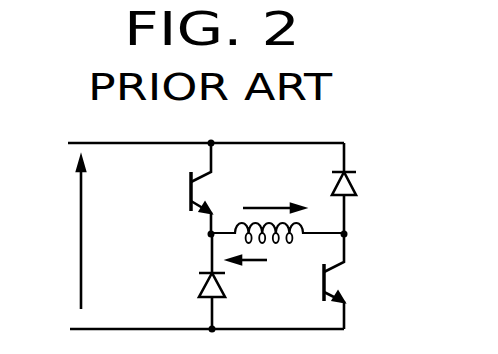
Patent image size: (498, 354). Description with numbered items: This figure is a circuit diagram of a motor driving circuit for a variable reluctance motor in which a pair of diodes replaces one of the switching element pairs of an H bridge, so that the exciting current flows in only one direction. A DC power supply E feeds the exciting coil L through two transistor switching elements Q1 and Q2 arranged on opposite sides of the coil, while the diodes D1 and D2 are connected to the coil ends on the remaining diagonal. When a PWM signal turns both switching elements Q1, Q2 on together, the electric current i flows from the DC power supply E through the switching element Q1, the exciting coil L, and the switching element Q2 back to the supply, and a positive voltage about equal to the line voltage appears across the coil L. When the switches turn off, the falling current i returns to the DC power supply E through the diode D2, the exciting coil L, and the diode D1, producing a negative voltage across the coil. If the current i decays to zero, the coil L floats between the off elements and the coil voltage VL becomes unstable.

The switching element Q1 is at (181, 188).
The switching element Q2 is at (355, 281).
The diode D1 is at (363, 188).
The diode D2 is at (229, 281).
The exciting coil L is at (309, 224).
The DC power supply E is at (66, 233).
The electric current i is at (273, 194).
The voltage across the exciting coil VL is at (265, 266).